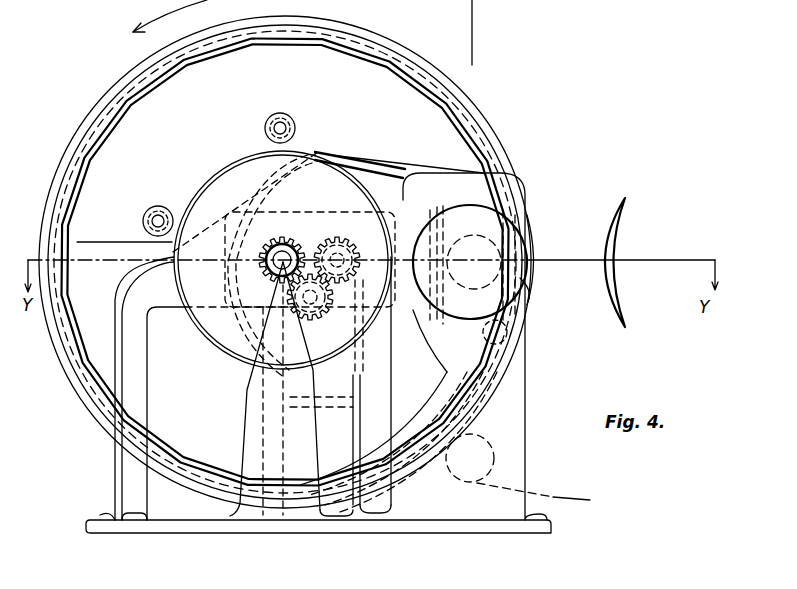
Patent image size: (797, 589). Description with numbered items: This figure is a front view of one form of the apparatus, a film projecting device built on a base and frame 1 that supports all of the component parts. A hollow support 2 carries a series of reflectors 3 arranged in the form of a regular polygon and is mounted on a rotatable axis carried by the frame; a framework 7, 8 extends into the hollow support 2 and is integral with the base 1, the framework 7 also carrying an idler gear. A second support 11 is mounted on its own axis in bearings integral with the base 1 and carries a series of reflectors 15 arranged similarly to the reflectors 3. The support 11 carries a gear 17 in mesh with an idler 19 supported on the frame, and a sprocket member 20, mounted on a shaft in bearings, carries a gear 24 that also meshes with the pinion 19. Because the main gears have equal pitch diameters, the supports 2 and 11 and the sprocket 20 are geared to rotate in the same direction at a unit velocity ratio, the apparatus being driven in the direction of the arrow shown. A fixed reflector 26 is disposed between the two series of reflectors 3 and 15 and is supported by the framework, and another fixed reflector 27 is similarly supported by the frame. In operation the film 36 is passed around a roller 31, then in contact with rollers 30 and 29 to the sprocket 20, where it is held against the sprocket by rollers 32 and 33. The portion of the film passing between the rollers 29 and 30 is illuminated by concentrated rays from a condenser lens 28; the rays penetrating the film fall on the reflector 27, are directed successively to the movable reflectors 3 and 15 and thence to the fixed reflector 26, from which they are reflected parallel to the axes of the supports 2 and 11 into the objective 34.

The base and frame 1 is at (410, 522).
The support for a series of reflectors 2 is at (462, 103).
The reflectors 3 is at (397, 76).
The framework 7 is at (140, 373).
The framework 8 is at (290, 416).
The support 11 is at (383, 180).
The reflectors 15 is at (355, 150).
The gear 17 is at (337, 244).
The idler gear 19 is at (322, 320).
The sprocket member 20 is at (217, 167).
The gear 24 is at (287, 244).
The fixed reflector 26 is at (467, 150).
The fixed reflector 27 is at (408, 330).
The condenser lens 28 is at (601, 285).
The roller 29 is at (515, 185).
The roller 30 is at (508, 333).
The roller 31 is at (492, 460).
The roller 32 is at (290, 117).
The roller 33 is at (150, 207).
The objective 34 is at (530, 250).
The film 36 is at (553, 497).